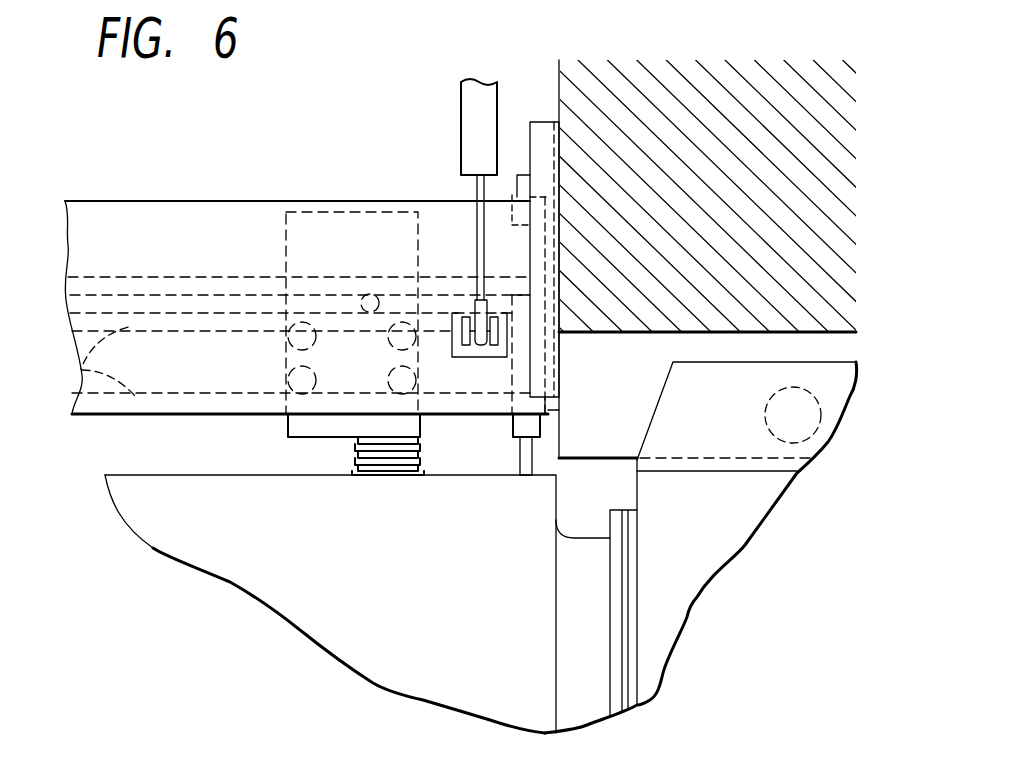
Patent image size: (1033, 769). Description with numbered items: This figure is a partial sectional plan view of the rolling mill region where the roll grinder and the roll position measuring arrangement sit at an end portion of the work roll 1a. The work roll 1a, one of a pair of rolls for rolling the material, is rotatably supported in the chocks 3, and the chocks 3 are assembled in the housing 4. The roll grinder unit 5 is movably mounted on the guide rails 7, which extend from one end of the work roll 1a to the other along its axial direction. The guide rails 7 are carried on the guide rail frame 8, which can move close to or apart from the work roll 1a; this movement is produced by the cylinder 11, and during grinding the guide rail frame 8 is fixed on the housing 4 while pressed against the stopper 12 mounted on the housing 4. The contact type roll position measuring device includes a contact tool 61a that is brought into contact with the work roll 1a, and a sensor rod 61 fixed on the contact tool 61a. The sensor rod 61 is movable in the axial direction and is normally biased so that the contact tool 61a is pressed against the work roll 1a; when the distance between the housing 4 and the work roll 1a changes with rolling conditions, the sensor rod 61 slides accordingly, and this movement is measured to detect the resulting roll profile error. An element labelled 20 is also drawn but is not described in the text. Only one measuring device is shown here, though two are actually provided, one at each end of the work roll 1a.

The housing 4 is at (736, 82).
The cylinder 11 is at (475, 112).
The stopper 12 is at (508, 195).
The guide rail frame 8 is at (158, 212).
The guide rails 7 is at (82, 372).
The roll grinder unit 5 is at (300, 457).
The spring 20 is at (388, 476).
The sensor rod 61 is at (520, 453).
The contact tool 61a is at (525, 478).
The work roll 1a is at (296, 612).
The chocks 3 is at (728, 540).